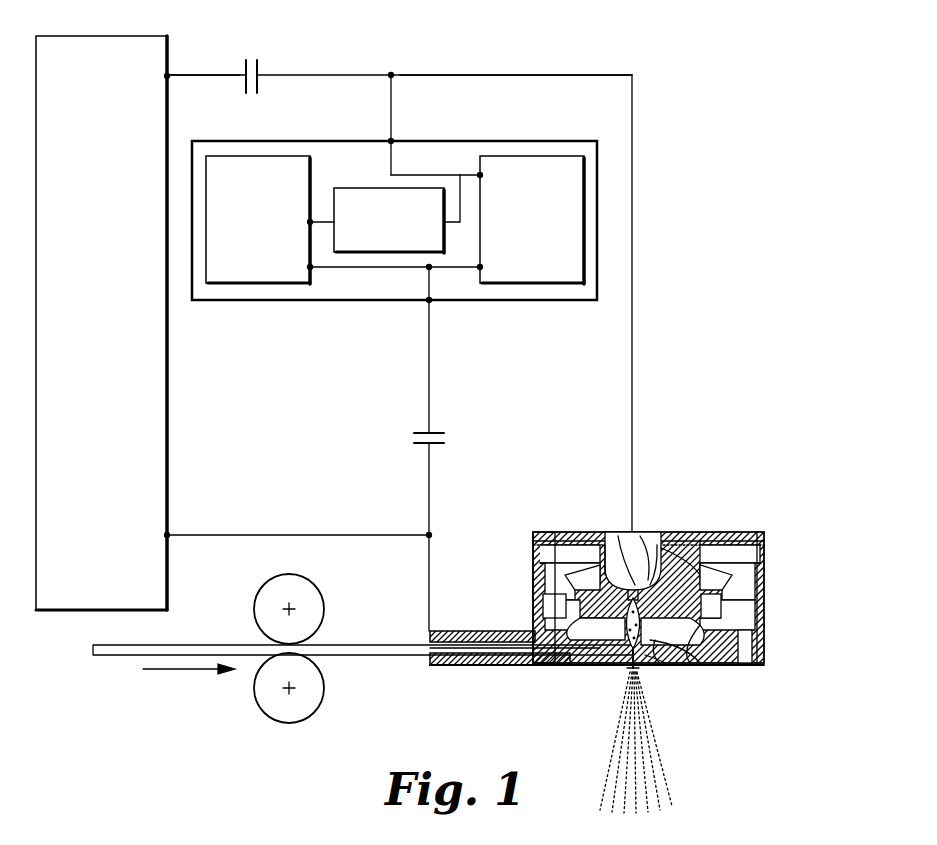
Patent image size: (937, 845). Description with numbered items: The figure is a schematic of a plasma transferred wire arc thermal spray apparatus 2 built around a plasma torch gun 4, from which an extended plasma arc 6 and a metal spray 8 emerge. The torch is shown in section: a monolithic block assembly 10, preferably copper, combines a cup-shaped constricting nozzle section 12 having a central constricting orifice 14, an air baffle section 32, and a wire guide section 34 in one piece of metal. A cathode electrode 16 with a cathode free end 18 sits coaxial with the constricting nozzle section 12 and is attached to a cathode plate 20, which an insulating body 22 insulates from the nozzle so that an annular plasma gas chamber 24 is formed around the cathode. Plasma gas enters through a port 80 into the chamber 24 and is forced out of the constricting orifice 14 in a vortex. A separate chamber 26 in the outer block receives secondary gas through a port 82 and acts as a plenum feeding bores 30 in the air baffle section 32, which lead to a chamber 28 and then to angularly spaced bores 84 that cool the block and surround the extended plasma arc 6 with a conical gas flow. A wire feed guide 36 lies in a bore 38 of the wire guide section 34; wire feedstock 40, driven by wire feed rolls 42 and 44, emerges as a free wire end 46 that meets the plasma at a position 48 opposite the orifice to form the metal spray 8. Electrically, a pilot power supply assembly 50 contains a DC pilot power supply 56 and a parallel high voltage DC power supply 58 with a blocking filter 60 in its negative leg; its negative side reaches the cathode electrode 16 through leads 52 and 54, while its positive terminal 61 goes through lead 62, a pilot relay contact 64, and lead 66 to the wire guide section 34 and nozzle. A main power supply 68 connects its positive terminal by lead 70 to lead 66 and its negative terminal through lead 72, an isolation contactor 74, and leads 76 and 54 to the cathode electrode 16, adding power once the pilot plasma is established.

The plasma transferred wire arc thermal spray apparatus 2 is at (670, 152).
The plasma torch gun 4 is at (777, 530).
The extended plasma arc 6 is at (688, 664).
The metal spray 8 is at (660, 795).
The monolithic block assembly 10 is at (765, 650).
The constricting nozzle section 12 is at (672, 546).
The constricting orifice 14 is at (706, 664).
The cathode electrode 16 is at (616, 558).
The cathode free end 18 is at (640, 572).
The cathode plate 20 is at (700, 541).
The insulating body 22 is at (540, 556).
The annular plasma gas chamber 24 is at (583, 548).
The chamber 26 is at (553, 598).
The chamber 28 is at (558, 570).
The bores 30 is at (562, 585).
The air baffle section 32 is at (755, 541).
The wire guide section 34 is at (530, 666).
The wire feed guide 36 is at (500, 666).
The bore 38 is at (560, 666).
The wire feedstock 40 is at (350, 656).
The wire feed roll 42 is at (320, 688).
The wire feed roll 44 is at (313, 605).
The free wire end 46 is at (626, 656).
The position 48 is at (650, 650).
The pilot power supply assembly 50 is at (544, 140).
The electrical lead 52 is at (391, 100).
The electrical lead 54 is at (505, 74).
The pilot power supply 56 is at (260, 284).
The high voltage DC power supply 58 is at (535, 284).
The high voltage DC blocking filter 60 is at (372, 187).
The positive terminal 61 is at (427, 302).
The lead 62 is at (428, 368).
The pilot relay contact 64 is at (424, 445).
The lead 66 is at (428, 490).
The main plasma transferred wire arc power supply 68 is at (169, 408).
The lead 70 is at (268, 534).
The lead 72 is at (221, 74).
The isolation contactor 74 is at (259, 68).
The lead 76 is at (335, 74).
The port 80 is at (537, 540).
The port 82 is at (535, 616).
The angularly spaced bores 84 is at (556, 542).